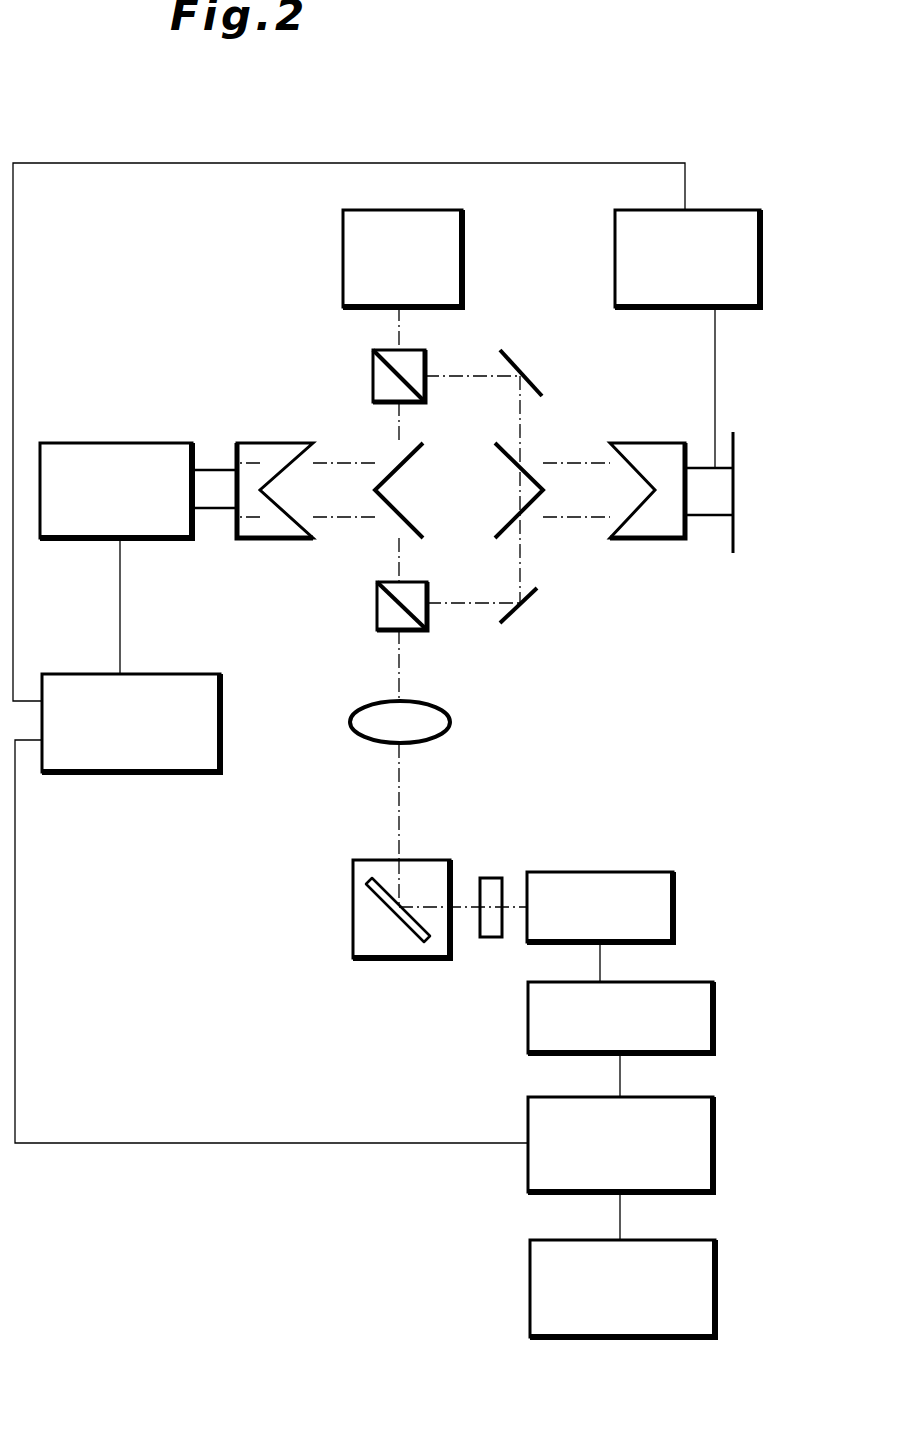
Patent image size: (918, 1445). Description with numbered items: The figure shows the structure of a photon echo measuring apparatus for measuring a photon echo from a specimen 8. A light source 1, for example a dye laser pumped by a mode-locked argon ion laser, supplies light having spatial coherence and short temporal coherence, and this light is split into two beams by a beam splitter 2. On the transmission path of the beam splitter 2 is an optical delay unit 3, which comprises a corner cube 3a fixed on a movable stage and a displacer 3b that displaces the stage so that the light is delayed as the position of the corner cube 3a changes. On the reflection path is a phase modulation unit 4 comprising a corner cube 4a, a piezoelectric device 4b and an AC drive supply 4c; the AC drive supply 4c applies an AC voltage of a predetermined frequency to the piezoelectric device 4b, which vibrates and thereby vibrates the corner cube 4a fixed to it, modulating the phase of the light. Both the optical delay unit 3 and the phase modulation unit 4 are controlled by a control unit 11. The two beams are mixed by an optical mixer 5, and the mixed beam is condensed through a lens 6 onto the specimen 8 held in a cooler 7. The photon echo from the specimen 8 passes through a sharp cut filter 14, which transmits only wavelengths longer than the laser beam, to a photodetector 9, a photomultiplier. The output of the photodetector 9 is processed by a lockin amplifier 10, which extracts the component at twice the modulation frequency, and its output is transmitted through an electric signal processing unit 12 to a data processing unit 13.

The light source 1 is at (462, 262).
The beam splitter 2 is at (420, 352).
The optical delay unit 3 is at (176, 438).
The corner cube 3a is at (275, 469).
The displacer 3b is at (78, 443).
The phase modulation unit 4 is at (691, 405).
The corner cube 4a is at (640, 443).
The piezoelectric device 4b is at (714, 517).
The AC drive supply 4c is at (760, 275).
The optical mixer 5 is at (377, 605).
The lens 6 is at (350, 720).
The cooler 7 is at (382, 884).
The specimen 8 is at (384, 906).
The photodetector 9 is at (673, 915).
The lockin amplifier 10 is at (713, 1030).
The control unit 11 is at (175, 674).
The electric signal processing unit 12 is at (713, 1152).
The data processing unit 13 is at (715, 1285).
The sharp cut filter 14 is at (492, 878).